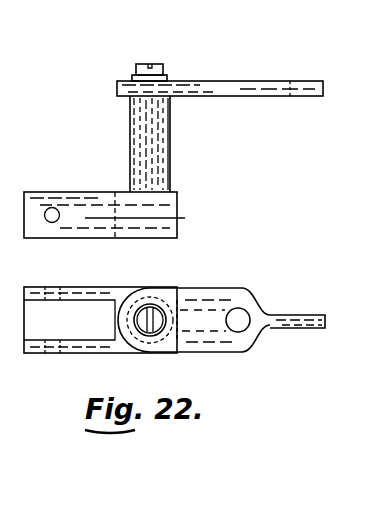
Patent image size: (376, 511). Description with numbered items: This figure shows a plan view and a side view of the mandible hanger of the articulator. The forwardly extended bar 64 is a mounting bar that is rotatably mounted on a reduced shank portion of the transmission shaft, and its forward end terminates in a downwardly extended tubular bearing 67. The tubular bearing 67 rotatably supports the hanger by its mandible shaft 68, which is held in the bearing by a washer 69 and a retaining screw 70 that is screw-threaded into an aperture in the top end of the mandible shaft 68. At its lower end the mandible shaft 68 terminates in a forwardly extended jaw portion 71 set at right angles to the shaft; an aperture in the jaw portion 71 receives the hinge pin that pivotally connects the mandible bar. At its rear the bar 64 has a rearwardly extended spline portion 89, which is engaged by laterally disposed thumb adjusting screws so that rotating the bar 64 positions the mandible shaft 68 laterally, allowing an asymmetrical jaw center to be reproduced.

The forwardly extended bar 64 is at (190, 88).
The tubular bearing 67 is at (130, 127).
The mandible shaft 68 is at (147, 177).
The washer 69 is at (133, 78).
The retaining screw 70 is at (160, 66).
The jaw portion 71 is at (75, 205).
The spline portion 89 is at (292, 88).